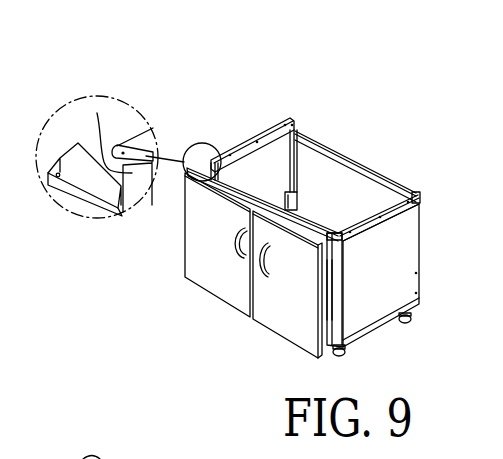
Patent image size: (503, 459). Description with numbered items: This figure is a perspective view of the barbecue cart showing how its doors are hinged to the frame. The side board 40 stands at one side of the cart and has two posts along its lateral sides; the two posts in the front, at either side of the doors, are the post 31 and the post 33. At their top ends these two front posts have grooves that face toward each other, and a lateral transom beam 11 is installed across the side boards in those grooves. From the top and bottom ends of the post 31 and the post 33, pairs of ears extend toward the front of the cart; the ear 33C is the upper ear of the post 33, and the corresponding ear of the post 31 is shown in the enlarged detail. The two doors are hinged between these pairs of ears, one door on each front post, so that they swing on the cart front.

The lateral transom beam 11 is at (250, 206).
The post 31 is at (97, 112).
The post 33 is at (337, 278).
The ear 33C is at (337, 238).
The side board 40 is at (33, 458).